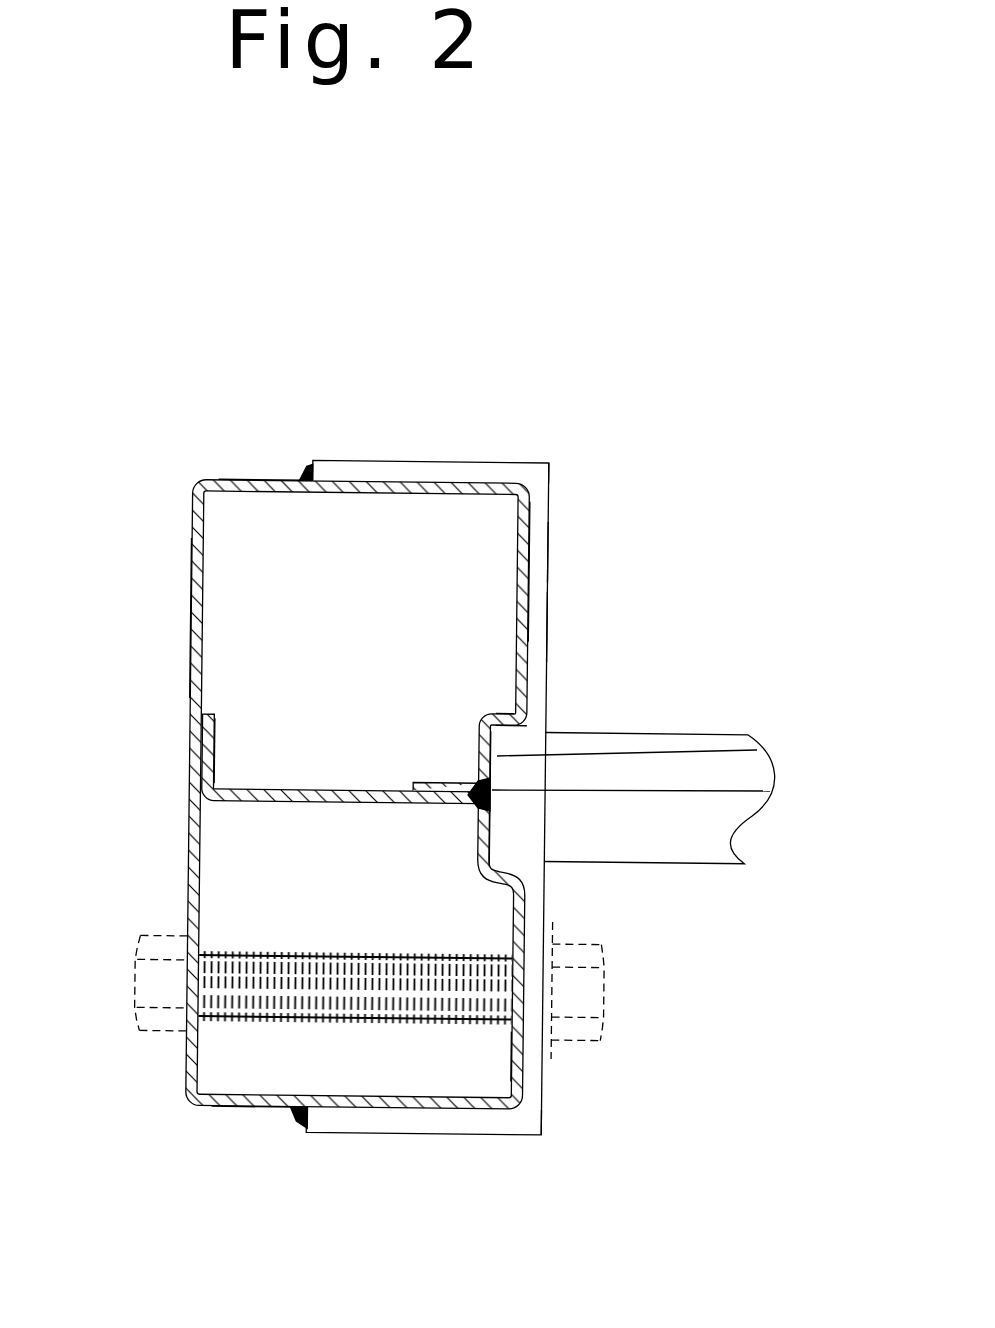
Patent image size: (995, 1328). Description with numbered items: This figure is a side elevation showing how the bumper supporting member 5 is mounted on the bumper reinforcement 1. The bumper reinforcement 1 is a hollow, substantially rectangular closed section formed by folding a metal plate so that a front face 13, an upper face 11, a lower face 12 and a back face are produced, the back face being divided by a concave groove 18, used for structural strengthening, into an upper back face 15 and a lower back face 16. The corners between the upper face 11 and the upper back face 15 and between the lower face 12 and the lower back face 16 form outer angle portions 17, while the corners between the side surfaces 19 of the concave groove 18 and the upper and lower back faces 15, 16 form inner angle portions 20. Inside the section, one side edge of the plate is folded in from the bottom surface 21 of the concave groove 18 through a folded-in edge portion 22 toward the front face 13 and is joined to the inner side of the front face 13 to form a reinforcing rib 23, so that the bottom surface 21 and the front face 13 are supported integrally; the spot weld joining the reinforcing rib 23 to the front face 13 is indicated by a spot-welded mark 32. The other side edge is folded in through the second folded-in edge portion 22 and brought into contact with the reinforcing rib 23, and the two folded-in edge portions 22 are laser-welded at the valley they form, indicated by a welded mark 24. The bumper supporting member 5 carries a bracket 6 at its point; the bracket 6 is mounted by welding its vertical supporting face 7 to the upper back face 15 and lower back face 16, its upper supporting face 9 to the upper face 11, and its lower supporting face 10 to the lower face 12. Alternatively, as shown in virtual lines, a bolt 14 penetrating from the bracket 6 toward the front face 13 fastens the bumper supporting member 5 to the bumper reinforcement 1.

The bumper reinforcement 1 is at (190, 476).
The bumper supporting member 5 is at (688, 731).
The bracket 6 is at (560, 545).
The vertical supporting face 7 is at (550, 608).
The upper supporting face 9 is at (427, 462).
The lower supporting face 10 is at (400, 1131).
The upper face 11 is at (252, 480).
The lower face 12 is at (240, 1108).
The front face 13 is at (190, 567).
The bolt 14 is at (602, 1003).
The upper back face 15 is at (532, 522).
The lower back face 16 is at (515, 1047).
The outer angle portion 17 is at (534, 478).
The concave groove 18 is at (507, 812).
The side surface 19 is at (497, 756).
The inner angle portion 20 is at (497, 712).
The bottom surface 21 is at (757, 750).
The folded-in edge portion 22 is at (470, 790).
The reinforcing rib 23 is at (330, 800).
The welded mark 24 is at (770, 791).
The spot-welded mark 32 is at (205, 744).